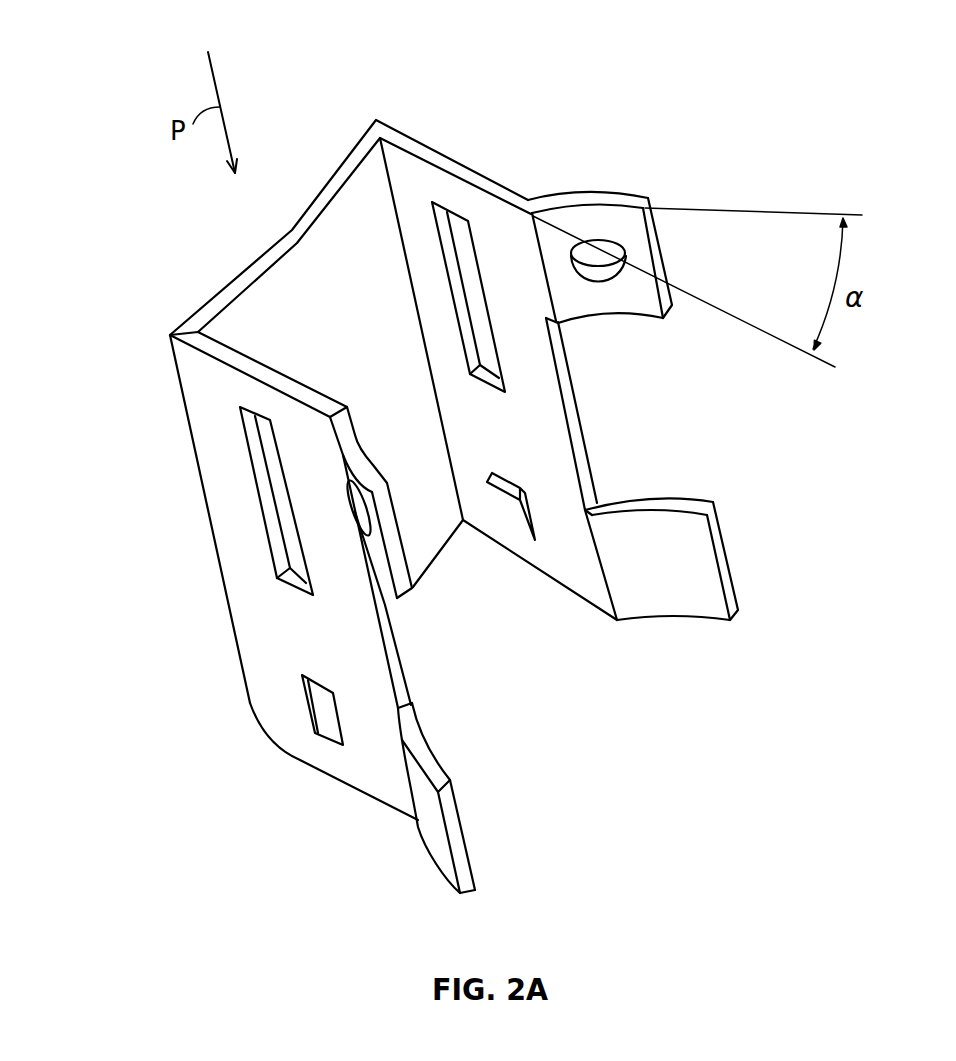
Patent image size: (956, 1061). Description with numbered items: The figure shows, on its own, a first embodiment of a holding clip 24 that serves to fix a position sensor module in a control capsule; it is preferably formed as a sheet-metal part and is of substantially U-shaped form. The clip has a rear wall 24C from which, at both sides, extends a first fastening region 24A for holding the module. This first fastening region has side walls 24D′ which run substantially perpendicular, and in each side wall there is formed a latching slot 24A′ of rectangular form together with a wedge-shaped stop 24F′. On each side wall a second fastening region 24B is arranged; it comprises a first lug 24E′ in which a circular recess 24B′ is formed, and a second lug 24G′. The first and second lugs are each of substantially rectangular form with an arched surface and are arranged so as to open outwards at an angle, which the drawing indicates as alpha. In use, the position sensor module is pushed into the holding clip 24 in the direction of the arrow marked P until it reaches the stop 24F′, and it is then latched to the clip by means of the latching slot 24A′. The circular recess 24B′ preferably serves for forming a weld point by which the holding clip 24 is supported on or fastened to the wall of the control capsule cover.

The holding clip 24 is at (417, 460).
The first fastening region 24A is at (441, 284).
The latching slot 24A′ is at (258, 481).
The second fastening region 24B is at (640, 188).
The circular recess 24B′ is at (358, 518).
The rear wall 24C is at (255, 302).
The side wall 24D′ is at (207, 402).
The first lug 24E′ is at (353, 453).
The wedge-shaped stop 24F′ is at (325, 700).
The second lug 24G′ is at (460, 857).